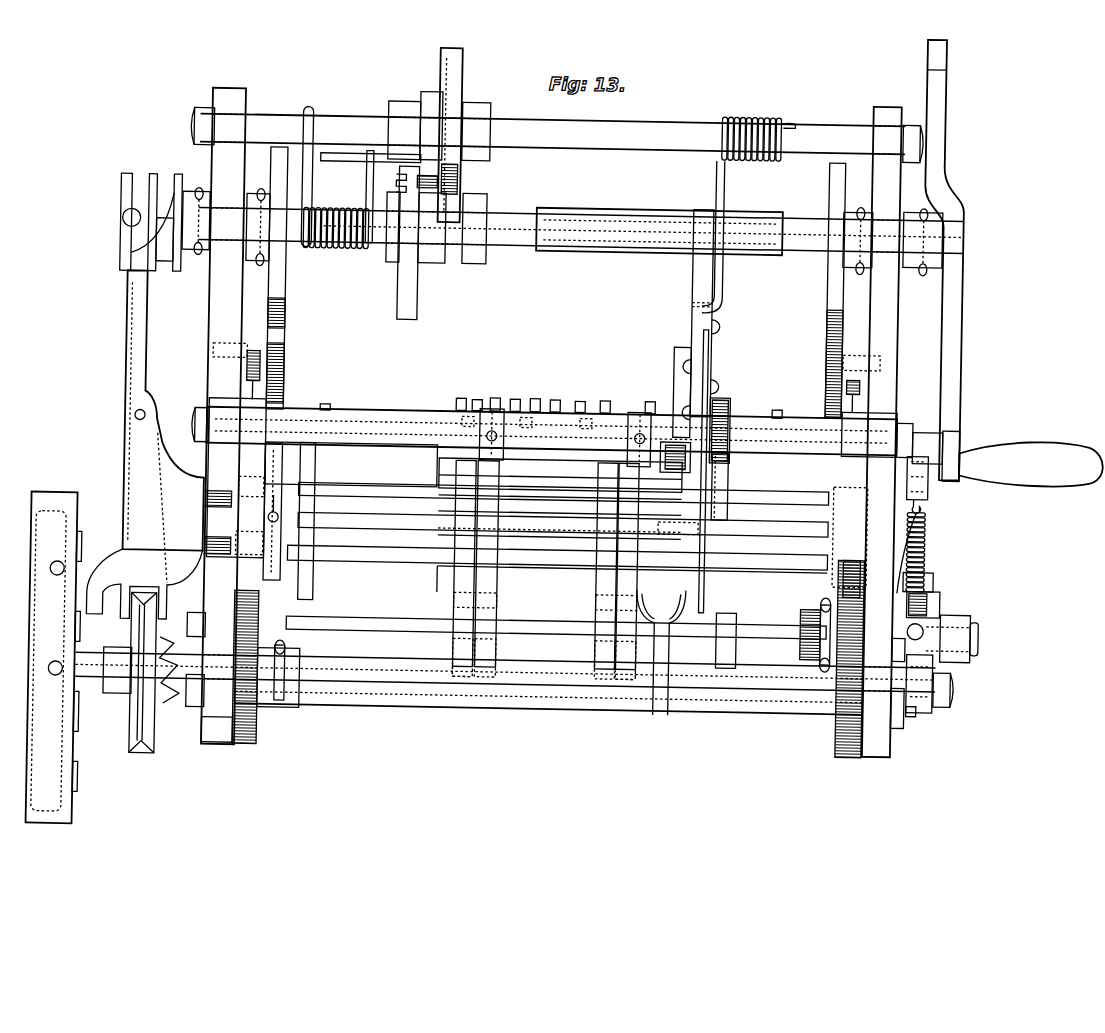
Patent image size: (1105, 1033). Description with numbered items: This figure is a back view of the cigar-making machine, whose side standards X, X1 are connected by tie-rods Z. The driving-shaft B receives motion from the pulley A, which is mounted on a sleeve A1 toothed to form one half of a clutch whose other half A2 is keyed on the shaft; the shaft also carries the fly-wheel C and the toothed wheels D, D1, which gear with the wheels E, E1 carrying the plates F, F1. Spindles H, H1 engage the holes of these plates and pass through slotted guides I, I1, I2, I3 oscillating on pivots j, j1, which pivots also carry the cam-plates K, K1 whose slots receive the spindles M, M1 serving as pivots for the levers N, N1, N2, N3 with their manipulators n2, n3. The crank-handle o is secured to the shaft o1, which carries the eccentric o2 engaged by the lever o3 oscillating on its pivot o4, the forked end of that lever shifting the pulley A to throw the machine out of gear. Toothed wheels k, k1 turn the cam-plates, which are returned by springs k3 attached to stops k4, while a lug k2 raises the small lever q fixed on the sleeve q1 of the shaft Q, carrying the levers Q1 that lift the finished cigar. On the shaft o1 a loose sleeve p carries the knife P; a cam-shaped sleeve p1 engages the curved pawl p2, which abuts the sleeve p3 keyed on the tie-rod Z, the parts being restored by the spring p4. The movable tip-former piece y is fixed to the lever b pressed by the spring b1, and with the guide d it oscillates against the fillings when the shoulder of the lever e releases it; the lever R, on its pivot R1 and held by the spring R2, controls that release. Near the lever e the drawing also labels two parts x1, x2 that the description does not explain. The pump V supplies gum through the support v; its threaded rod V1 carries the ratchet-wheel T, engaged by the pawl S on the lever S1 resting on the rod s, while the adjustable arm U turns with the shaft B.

The side standard X is at (223, 416).
The side standard X1 is at (882, 432).
The tie-rod Z is at (552, 411).
The shaft o1 is at (502, 232).
The knife P is at (456, 86).
The sleeve p3 is at (439, 126).
The sleeve p is at (436, 228).
The curved pawl p2 is at (408, 242).
The cam-shaped sleeve p1 is at (378, 205).
The spring p4 is at (328, 213).
The toothed wheel k1 is at (270, 174).
The cam-plate K1 is at (283, 318).
The stop k4 is at (238, 361).
The toothed wheel k is at (841, 176).
The cam-plate K is at (842, 364).
The spring k3 is at (865, 384).
The crank-handle o is at (960, 206).
The shaft Q is at (551, 483).
The pivot R1 is at (920, 426).
The pivot j1 is at (330, 411).
The pivot j is at (777, 408).
The manipulator n3 is at (561, 460).
The manipulator n2 is at (561, 475).
The lever Q1 is at (575, 438).
The sleeve q1 is at (372, 450).
The small lever q is at (273, 511).
The guide I is at (316, 471).
The lug k2 is at (274, 507).
The spindle M1 is at (564, 494).
The spindle M is at (563, 527).
The spindle H1 is at (557, 562).
The pump V is at (632, 590).
The spindle H is at (556, 627).
The support v is at (678, 539).
The lever N3 is at (545, 569).
The lever N2 is at (545, 564).
The lever N1 is at (543, 658).
The lever N is at (544, 659).
The lever b is at (690, 276).
The spring b1 is at (721, 187).
The movable piece y is at (682, 392).
The guide d is at (712, 340).
The lever e is at (683, 457).
The threaded block x1 is at (731, 432).
The guide I1 is at (778, 652).
The pin x2 is at (719, 487).
The guide I2 is at (792, 486).
The toothed wheel E is at (228, 523).
The plate F1 is at (265, 548).
The plate F is at (835, 552).
The toothed wheel D is at (304, 674).
The guide I3 is at (290, 650).
The sleeve A1 is at (191, 659).
The clutch half A2 is at (167, 670).
The pulley A is at (140, 714).
The driving-shaft B is at (966, 683).
The lever o3 is at (136, 330).
The eccentric o2 is at (165, 239).
The pivot o4 is at (145, 420).
The fly-wheel C is at (54, 658).
The bolt c is at (53, 577).
The toothed wheel D1 is at (810, 680).
The toothed wheel E1 is at (863, 568).
The lever R is at (929, 488).
The spring R2 is at (927, 546).
The rod s is at (906, 552).
The pawl S is at (936, 570).
The lever S1 is at (943, 592).
The pump rod V1 is at (982, 634).
The link-shaped arm U is at (921, 691).
The ratchet-wheel T is at (916, 710).